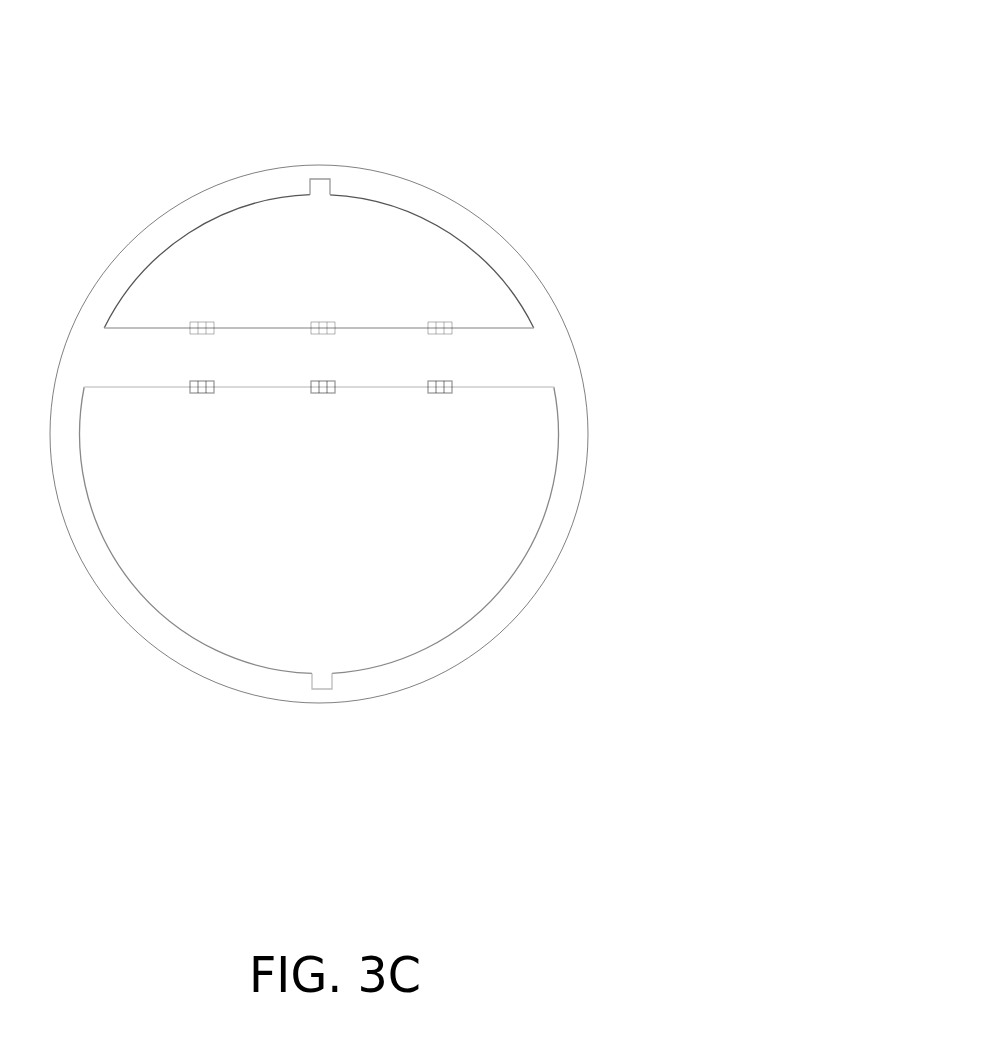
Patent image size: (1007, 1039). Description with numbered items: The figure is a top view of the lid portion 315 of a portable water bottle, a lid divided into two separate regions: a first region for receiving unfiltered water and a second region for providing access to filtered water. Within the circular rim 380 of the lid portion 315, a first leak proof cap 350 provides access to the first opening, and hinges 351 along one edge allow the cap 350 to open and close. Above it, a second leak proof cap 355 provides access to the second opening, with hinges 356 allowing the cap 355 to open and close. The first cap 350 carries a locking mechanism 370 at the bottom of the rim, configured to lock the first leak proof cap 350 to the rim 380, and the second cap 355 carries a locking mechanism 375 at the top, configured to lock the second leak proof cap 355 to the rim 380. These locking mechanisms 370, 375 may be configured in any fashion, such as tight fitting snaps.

The lid portion 315 is at (693, 44).
The rim 380 is at (553, 572).
The locking mechanism 375 is at (332, 180).
The locking mechanism 370 is at (332, 689).
The second leak proof cap 355 is at (303, 272).
The first leak proof cap 350 is at (303, 570).
The hinges 356 is at (212, 322).
The hinges 351 is at (202, 393).